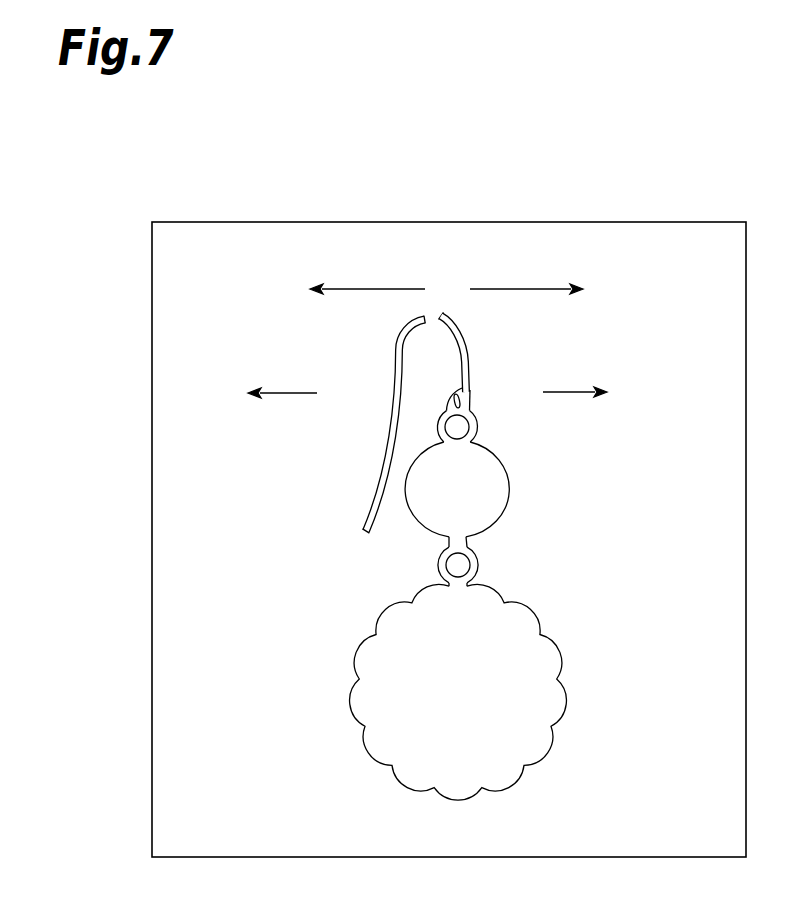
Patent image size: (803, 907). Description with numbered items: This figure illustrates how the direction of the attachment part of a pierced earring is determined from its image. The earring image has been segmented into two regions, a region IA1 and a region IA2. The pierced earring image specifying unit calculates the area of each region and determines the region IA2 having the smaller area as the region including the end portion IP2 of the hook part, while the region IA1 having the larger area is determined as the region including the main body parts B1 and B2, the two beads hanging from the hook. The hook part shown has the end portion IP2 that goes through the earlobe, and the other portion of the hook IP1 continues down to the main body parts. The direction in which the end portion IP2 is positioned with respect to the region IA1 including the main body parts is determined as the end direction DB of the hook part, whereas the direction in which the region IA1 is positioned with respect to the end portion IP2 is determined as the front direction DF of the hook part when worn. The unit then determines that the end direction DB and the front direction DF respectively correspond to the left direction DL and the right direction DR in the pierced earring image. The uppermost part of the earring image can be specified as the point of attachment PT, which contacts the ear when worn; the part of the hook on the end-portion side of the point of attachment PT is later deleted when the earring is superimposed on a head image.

The point of attachment PT is at (441, 306).
The left direction DL is at (377, 290).
The right direction DR is at (533, 291).
The end direction DB is at (289, 390).
The front direction DF is at (579, 390).
The portion of hook part on main body side IP1 is at (470, 384).
The main body part B1 is at (509, 487).
The main body part B2 is at (488, 668).
The region including main body parts IA1 is at (519, 558).
The end portion of hook part IP2 is at (372, 501).
The region including end portion of hook part IA2 is at (326, 424).